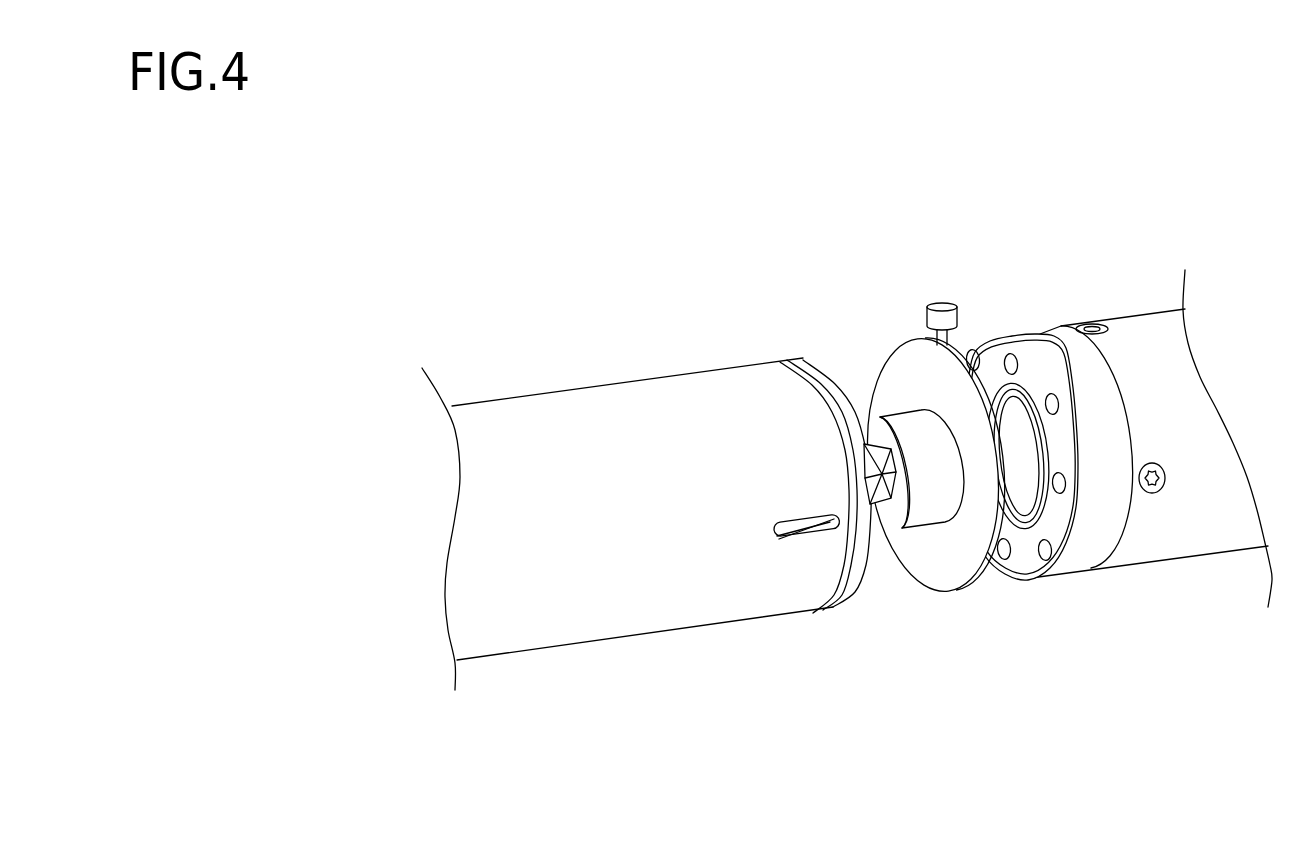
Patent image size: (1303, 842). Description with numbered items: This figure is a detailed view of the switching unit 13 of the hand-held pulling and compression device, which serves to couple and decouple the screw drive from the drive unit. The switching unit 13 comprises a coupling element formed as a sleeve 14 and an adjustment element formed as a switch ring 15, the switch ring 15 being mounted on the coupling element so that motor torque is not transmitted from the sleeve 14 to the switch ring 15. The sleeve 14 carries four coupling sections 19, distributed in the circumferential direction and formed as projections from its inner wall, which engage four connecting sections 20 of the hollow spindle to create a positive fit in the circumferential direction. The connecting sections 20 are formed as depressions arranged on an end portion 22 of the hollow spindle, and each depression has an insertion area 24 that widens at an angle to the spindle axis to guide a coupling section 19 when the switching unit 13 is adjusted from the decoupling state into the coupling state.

The switching unit 13 is at (847, 426).
The coupling element (sleeve) 14 is at (1015, 497).
The adjustment element (switch ring) 15 is at (938, 376).
The coupling section 19 is at (875, 450).
The connecting section (depression) 20 is at (879, 535).
The end portion of the hollow spindle 22 is at (882, 556).
The insertion area 24 is at (882, 462).